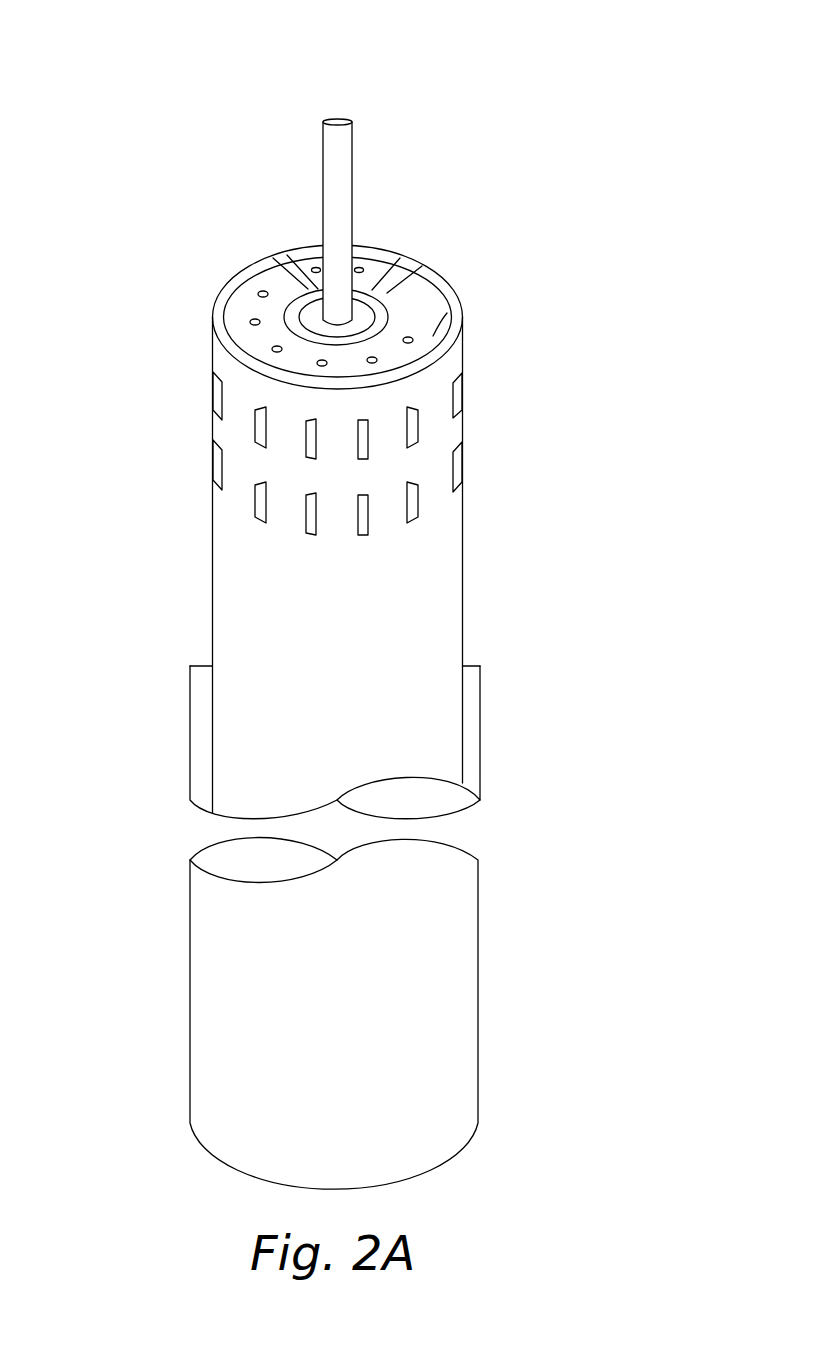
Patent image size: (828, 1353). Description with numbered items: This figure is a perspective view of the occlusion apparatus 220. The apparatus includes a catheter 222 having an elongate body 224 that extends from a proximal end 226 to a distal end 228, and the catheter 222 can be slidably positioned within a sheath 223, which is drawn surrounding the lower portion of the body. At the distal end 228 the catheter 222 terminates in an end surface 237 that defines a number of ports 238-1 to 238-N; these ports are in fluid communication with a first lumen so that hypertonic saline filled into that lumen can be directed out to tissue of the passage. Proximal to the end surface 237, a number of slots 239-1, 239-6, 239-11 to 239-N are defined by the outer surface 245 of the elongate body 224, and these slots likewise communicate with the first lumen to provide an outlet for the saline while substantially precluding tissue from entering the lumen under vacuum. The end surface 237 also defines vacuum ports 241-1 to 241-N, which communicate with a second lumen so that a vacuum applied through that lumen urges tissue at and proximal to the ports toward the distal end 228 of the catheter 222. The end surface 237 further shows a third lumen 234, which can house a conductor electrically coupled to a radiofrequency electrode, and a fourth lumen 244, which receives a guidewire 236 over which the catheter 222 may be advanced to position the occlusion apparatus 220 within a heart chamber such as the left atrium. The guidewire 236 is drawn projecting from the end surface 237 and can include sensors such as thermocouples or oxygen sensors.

The occlusion apparatus 220 is at (128, 83).
The catheter 222 is at (595, 422).
The sheath 223 is at (475, 742).
The elongate body 224 is at (462, 562).
The proximal end 226 is at (518, 1002).
The distal end 228 is at (522, 242).
The third lumen 234 is at (413, 284).
The guidewire 236 is at (326, 148).
The end surface 237 is at (390, 317).
The port 238-1 is at (262, 290).
The port 238-N is at (408, 336).
The slot 239-1 is at (212, 386).
The slot 239-6 is at (310, 535).
The slot 239-11 is at (462, 390).
The slot 239-N is at (462, 465).
The vacuum port 241-1 is at (311, 268).
The vacuum port 241-N is at (363, 268).
The fourth lumen 244 is at (300, 276).
The outer surface 245 is at (462, 517).